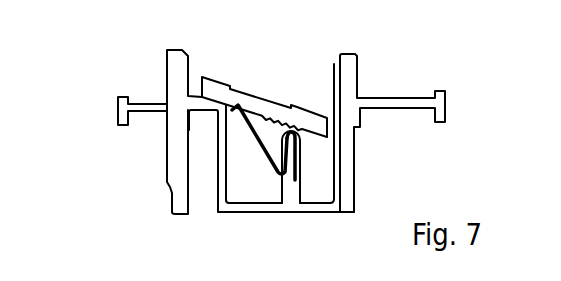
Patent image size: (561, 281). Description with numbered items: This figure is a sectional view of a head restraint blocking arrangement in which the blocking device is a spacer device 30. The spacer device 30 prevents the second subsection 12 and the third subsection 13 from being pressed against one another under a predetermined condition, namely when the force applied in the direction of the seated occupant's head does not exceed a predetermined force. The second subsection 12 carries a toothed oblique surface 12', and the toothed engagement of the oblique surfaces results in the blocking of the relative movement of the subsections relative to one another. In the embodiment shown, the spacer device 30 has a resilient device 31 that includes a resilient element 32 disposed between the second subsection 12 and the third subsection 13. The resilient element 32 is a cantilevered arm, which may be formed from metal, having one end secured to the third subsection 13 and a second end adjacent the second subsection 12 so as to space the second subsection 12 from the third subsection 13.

The second subsection 12 is at (268, 94).
The oblique surface 12' is at (268, 94).
The third subsection 13 is at (345, 157).
The spacer device 30 is at (146, 148).
The resilient device 31 is at (256, 136).
The resilient element 32 is at (291, 156).